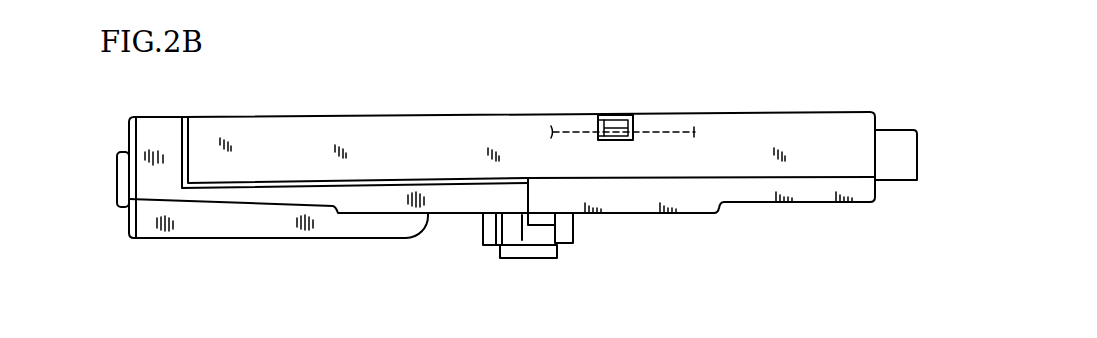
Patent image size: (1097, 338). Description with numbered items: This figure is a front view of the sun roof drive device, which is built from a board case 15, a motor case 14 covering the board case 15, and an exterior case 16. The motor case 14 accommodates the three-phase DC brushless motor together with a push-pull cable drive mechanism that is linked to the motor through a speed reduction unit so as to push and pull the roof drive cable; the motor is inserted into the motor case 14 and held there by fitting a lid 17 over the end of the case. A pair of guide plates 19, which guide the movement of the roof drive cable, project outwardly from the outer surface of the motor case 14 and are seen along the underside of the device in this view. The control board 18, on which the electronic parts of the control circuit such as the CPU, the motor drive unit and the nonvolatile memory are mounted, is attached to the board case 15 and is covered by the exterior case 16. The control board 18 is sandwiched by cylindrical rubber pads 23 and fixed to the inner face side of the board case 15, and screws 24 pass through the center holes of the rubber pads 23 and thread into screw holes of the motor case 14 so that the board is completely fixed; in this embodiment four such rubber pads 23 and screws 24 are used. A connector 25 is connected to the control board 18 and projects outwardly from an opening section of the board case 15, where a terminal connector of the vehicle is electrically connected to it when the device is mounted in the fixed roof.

The motor case 14 is at (275, 223).
The board case 15 is at (378, 133).
The exterior case 16 is at (708, 202).
The lid 17 is at (130, 137).
The control board 18 is at (665, 132).
The guide plates 19 is at (490, 245).
The rubber pads 23 is at (595, 130).
The screws 24 is at (615, 112).
The connector 25 is at (900, 138).